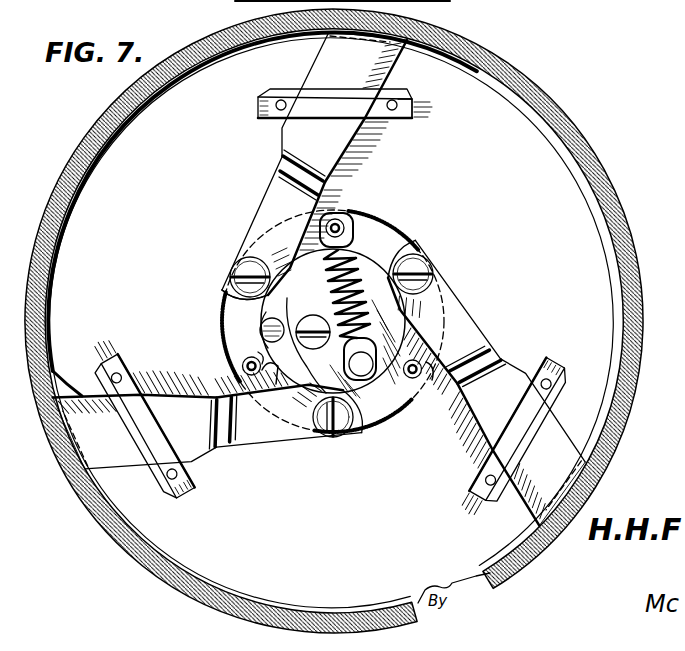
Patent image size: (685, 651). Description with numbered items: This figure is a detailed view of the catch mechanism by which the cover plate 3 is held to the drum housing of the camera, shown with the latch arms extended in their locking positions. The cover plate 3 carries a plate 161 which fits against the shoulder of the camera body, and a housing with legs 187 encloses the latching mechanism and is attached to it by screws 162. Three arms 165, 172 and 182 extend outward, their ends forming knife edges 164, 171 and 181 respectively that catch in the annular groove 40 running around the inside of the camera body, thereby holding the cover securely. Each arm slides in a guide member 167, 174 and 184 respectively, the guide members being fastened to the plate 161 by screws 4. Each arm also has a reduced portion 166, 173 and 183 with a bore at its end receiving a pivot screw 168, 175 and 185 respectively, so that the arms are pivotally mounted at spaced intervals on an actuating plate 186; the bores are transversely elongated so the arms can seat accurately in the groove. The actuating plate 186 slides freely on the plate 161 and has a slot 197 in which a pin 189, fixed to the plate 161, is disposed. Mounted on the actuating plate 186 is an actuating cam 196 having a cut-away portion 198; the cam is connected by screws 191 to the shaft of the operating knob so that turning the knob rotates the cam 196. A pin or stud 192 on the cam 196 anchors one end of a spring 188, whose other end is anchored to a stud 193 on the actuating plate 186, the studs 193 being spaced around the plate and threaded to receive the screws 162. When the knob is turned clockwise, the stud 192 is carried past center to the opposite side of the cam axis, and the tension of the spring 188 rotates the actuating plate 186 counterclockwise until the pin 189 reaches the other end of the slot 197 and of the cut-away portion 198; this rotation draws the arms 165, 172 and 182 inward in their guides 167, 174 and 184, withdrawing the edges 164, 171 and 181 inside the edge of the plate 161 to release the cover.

The cover plate 3 is at (618, 268).
The screws 4 is at (386, 105).
The annular groove 40 is at (610, 235).
The plate 161 is at (331, 323).
The screws 162 is at (318, 220).
The knife edge 164 is at (418, 24).
The arm 165 is at (326, 62).
The reduced portion 166 is at (260, 212).
The guide member 167 is at (400, 119).
The pivot screw 168 is at (244, 265).
The knife edge 171 is at (596, 481).
The arm 172 is at (487, 433).
The reduced portion 173 is at (462, 288).
The guide member 174 is at (545, 395).
The pivot screw 175 is at (423, 265).
The knife edge 181 is at (72, 449).
The arm 182 is at (82, 402).
The reduced portion 183 is at (279, 437).
The guide member 184 is at (166, 472).
The pivot screw 185 is at (318, 444).
The actuating plate 186 is at (417, 262).
The legs 187 is at (382, 214).
The spring 188 is at (361, 256).
The pin 189 is at (262, 333).
The screws 191 is at (314, 327).
The pin or stud 192 is at (412, 414).
The stud 193 is at (347, 214).
The actuating cam 196 is at (293, 334).
The slot 197 is at (226, 296).
The cut-away portion 198 is at (275, 354).